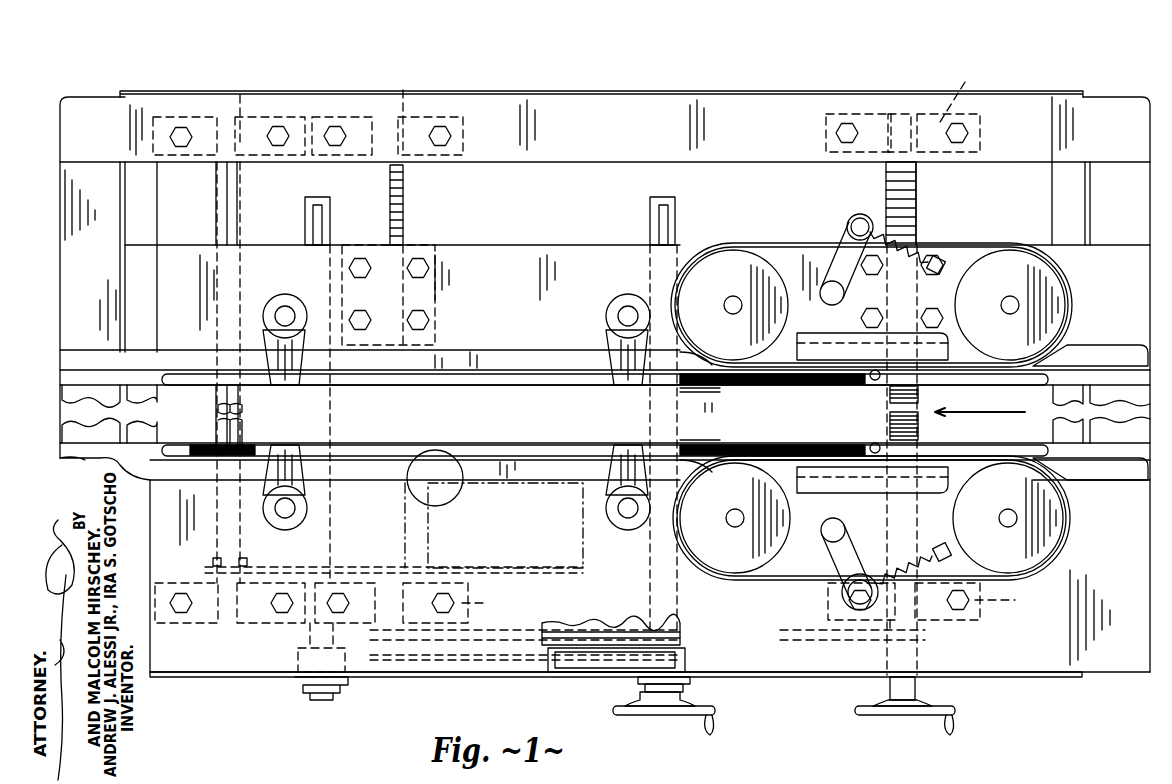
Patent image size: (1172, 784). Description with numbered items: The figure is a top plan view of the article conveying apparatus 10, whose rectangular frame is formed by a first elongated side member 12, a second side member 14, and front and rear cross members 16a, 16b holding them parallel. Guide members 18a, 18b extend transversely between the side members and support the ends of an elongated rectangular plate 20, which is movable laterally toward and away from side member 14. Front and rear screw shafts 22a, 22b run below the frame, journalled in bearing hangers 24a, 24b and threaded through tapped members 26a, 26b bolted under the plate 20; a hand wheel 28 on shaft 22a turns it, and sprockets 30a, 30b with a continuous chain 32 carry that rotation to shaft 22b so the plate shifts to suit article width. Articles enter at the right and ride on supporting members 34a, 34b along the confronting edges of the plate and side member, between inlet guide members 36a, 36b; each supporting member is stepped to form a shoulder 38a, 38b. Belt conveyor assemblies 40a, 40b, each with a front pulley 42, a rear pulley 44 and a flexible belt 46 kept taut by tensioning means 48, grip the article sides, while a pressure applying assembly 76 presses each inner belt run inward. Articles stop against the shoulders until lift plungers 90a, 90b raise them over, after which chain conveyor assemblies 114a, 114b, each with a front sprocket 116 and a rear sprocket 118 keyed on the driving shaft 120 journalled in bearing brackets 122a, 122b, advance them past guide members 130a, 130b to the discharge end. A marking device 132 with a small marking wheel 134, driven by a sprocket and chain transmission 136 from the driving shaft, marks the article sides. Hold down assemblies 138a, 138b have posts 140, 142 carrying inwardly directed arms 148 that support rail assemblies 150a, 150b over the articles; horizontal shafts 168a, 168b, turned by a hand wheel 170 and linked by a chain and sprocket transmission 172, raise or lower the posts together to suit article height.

The article conveying apparatus 10 is at (619, 45).
The first elongated side member 12 is at (735, 100).
The second elongated side member 14 is at (990, 660).
The front cross member 16a is at (1101, 384).
The rear cross member 16b is at (80, 233).
The front guide member 18a is at (1050, 190).
The rear guide member 18b is at (140, 218).
The elongated rectangular plate 20 is at (605, 320).
The front screw shaft 22a is at (916, 192).
The rear screw shaft 22b is at (404, 208).
The bearing hangers 24a is at (941, 340).
The bearing hangers 24b is at (408, 92).
The tapped member 26a is at (870, 300).
The tapped member 26b is at (430, 286).
The hand wheel 28 is at (888, 708).
The sprocket 30a is at (925, 632).
The sprocket 30b is at (487, 652).
The continuous chain 32 is at (596, 628).
The supporting member 34a is at (1090, 383).
The supporting member 34b is at (1090, 442).
The inlet guide member 36a is at (1100, 360).
The inlet guide member 36b is at (1085, 480).
The shoulder 38a is at (868, 379).
The shoulder 38b is at (870, 447).
The belt conveyor assembly 40a is at (808, 257).
The belt conveyor assembly 40b is at (823, 568).
The front pulley 42 is at (1048, 306).
The rear pulley 44 is at (734, 411).
The flexible belt 46 is at (965, 248).
The tensioning means 48 is at (840, 226).
The pressure applying assembly 76 is at (935, 353).
The lift plunger 90a is at (878, 380).
The lift plunger 90b is at (877, 444).
The chain conveyor assembly 114a is at (694, 385).
The chain conveyor assembly 114b is at (690, 442).
The front sprocket 116 is at (740, 394).
The rear sprocket 118 is at (205, 380).
The driving shaft 120 is at (240, 428).
The bearing bracket 122a is at (243, 92).
The bearing bracket 122b is at (210, 622).
The guide bar 130a is at (474, 366).
The guide bar 130b is at (497, 470).
The marking device 132 is at (530, 568).
The marking wheel 134 is at (418, 464).
The sprocket and chain transmission 136 is at (374, 549).
The hold down assembly 138a is at (570, 362).
The hold down assembly 138b is at (588, 441).
The post 140 is at (629, 304).
The post 142 is at (286, 304).
The inwardly directed arm 148 is at (266, 342).
The rail assembly 150a is at (462, 340).
The rail assembly 150b is at (482, 441).
The horizontal shaft 168a is at (668, 206).
The horizontal shaft 168b is at (314, 206).
The hand wheel 170 is at (672, 714).
The chain and sprocket transmission 172 is at (600, 664).